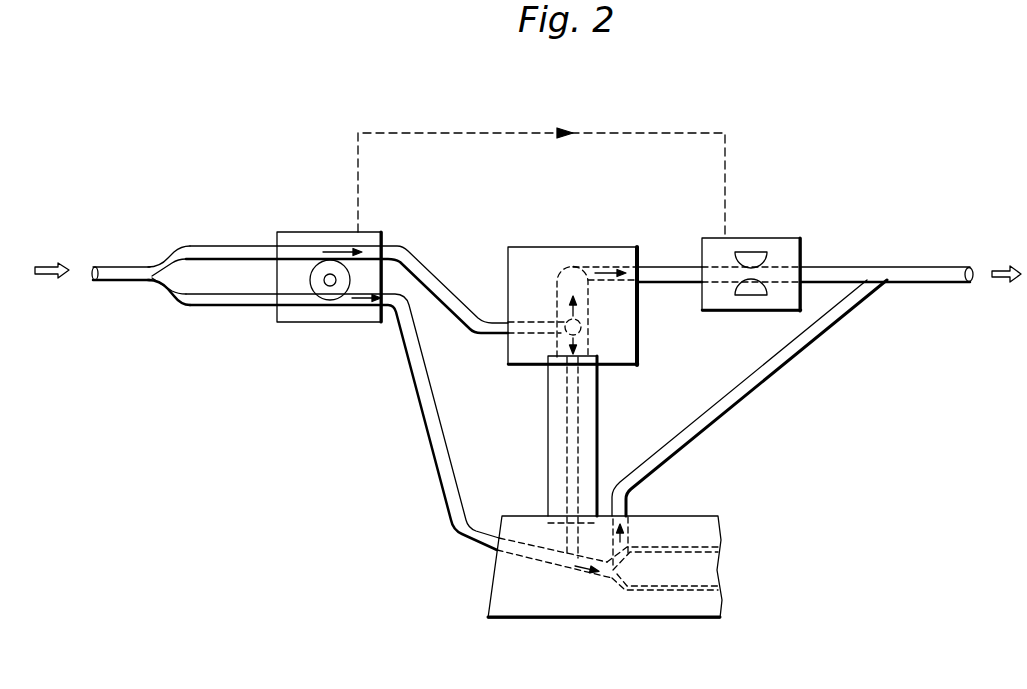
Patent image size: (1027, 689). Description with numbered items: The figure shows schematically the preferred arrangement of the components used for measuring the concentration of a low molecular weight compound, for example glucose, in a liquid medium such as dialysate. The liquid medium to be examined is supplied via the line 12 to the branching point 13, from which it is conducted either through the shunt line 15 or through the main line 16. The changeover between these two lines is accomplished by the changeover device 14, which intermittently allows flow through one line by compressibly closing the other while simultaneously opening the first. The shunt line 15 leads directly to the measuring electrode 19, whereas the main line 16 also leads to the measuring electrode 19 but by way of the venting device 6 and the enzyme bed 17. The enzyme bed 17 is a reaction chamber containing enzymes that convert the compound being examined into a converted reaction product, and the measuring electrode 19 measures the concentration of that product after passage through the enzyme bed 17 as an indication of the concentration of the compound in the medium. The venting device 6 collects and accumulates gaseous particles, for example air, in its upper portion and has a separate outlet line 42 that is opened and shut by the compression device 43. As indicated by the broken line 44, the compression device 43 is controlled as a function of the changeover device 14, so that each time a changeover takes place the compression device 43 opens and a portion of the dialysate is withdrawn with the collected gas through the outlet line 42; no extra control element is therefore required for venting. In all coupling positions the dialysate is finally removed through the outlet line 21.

The line 12 is at (112, 271).
The branching point 13 is at (152, 260).
The main line 16 is at (220, 250).
The shunt line 15 is at (227, 298).
The changeover device 14 is at (295, 238).
The broken line 44 is at (622, 132).
The venting device 6 is at (571, 247).
The enzyme bed 17 is at (590, 413).
The outlet line 42 is at (655, 268).
The compression device 43 is at (760, 245).
The outlet line 21 is at (925, 281).
The measuring electrode 19 is at (705, 568).